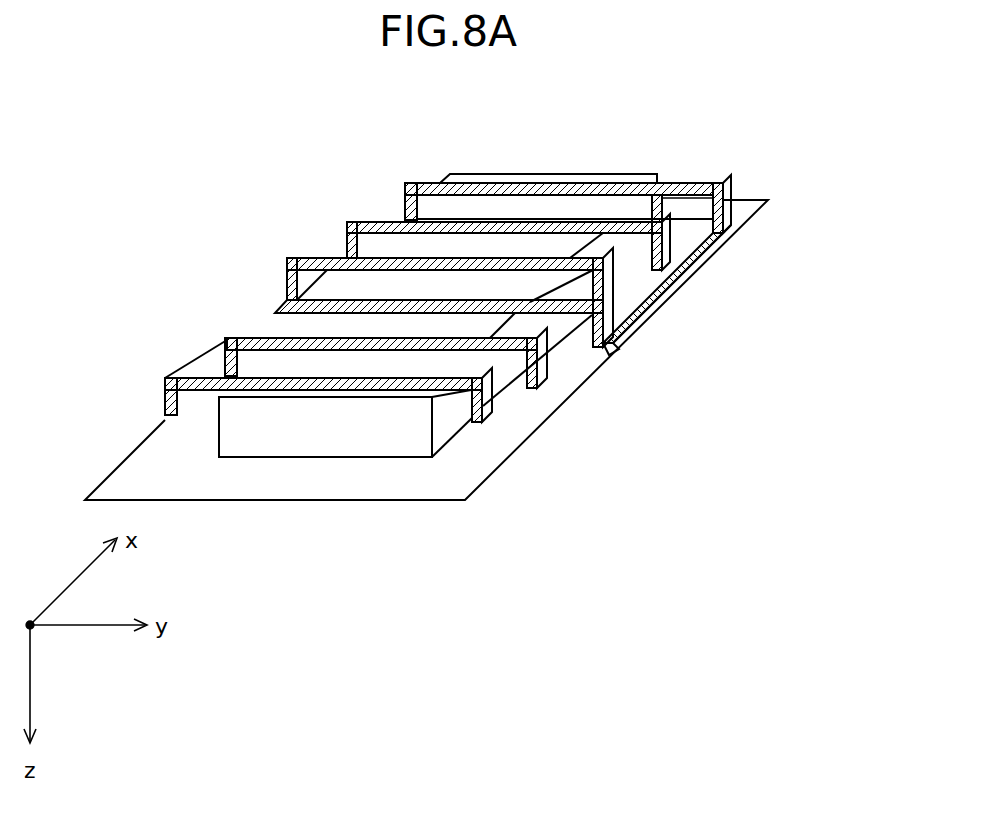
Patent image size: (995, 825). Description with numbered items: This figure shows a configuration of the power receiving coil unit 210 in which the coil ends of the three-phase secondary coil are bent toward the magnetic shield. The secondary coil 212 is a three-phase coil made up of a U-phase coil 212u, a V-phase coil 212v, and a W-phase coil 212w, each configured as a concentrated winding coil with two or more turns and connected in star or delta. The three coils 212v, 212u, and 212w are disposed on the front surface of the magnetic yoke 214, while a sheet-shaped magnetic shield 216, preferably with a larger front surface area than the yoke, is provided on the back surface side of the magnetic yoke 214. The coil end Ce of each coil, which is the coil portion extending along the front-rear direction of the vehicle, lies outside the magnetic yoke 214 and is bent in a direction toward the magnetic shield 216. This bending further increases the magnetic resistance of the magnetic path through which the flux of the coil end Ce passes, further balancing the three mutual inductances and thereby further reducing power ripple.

The power receiving coil unit 210 is at (795, 128).
The secondary coil 212 is at (200, 135).
The W-phase coil 212w is at (410, 183).
The U-phase coil 212u is at (357, 220).
The V-phase coil 212v is at (293, 257).
The magnetic yoke 214 is at (607, 178).
The magnetic shield 216 is at (740, 210).
The coil end Ce is at (668, 298).